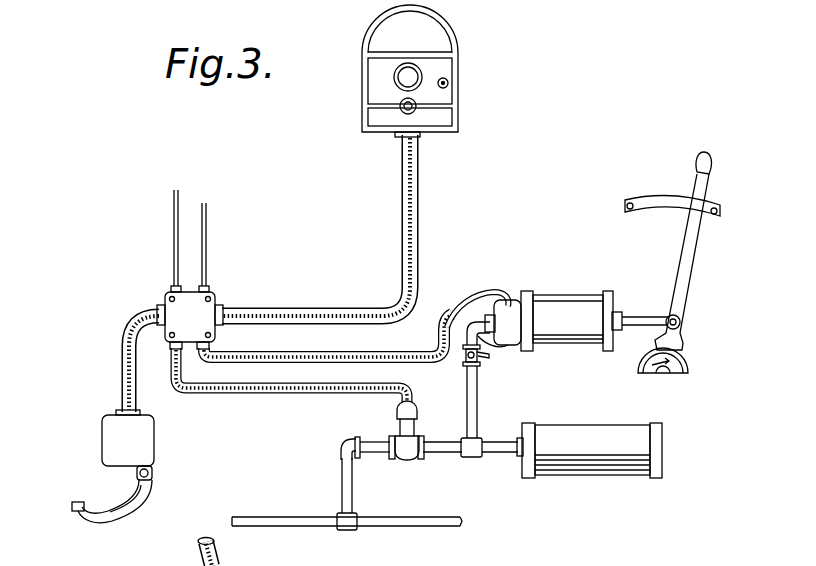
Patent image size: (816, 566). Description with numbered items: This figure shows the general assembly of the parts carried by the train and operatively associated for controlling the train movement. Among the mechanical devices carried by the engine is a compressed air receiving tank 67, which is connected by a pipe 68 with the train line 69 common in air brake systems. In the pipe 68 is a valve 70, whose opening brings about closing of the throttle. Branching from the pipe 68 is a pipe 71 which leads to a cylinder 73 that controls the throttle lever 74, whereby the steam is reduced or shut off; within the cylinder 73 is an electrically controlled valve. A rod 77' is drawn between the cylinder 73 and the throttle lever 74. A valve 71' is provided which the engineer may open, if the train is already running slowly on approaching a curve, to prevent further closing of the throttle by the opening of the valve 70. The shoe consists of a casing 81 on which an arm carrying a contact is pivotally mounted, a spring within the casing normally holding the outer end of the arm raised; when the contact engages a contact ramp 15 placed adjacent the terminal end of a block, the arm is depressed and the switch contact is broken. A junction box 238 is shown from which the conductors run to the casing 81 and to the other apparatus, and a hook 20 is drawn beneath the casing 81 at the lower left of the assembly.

The contact ramp 15 is at (460, 78).
The junction box 238 is at (186, 313).
The casing 81 is at (133, 440).
The hook 20 is at (140, 500).
The valve 70 is at (406, 428).
The pipe 71 is at (490, 380).
The valve 71' is at (493, 364).
The pipe 68 is at (506, 453).
The train line 69 is at (425, 526).
The cylinder 73 is at (575, 308).
The piston rod 77' is at (645, 301).
The throttle lever 74 is at (688, 287).
The compressed air receiving tank 67 is at (580, 445).